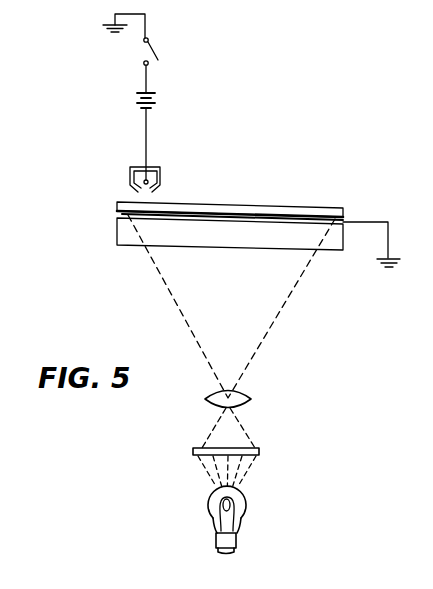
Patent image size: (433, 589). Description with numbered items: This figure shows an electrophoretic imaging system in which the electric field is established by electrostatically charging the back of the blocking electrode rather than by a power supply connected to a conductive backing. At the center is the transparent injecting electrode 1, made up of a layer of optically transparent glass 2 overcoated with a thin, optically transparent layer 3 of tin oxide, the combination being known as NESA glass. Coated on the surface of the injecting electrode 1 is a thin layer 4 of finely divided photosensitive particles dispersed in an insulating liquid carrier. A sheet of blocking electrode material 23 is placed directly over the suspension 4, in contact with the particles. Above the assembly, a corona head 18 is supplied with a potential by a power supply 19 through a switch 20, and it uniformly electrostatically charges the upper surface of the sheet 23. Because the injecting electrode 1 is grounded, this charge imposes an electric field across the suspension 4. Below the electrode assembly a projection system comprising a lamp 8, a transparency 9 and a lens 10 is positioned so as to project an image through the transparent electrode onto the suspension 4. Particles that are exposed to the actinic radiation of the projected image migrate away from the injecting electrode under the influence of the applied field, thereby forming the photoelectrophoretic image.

The transparent electrode 1 is at (95, 219).
The layer of optically transparent glass 2 is at (116, 237).
The optically transparent layer of tin oxide 3 is at (115, 209).
The layer of finely divided photosensitive particles 4 is at (345, 220).
The lamp 8 is at (246, 505).
The transparency 9 is at (259, 452).
The lens 10 is at (252, 400).
The corona head 18 is at (165, 172).
The power supply 19 is at (158, 100).
The switch 20 is at (156, 49).
The sheet of blocking electrode material 23 is at (305, 207).